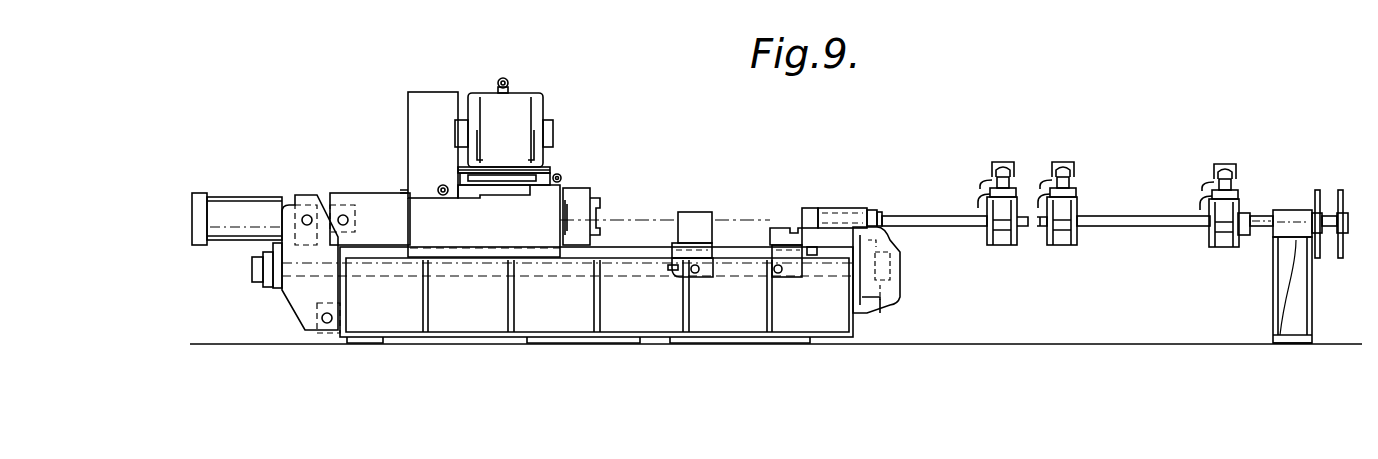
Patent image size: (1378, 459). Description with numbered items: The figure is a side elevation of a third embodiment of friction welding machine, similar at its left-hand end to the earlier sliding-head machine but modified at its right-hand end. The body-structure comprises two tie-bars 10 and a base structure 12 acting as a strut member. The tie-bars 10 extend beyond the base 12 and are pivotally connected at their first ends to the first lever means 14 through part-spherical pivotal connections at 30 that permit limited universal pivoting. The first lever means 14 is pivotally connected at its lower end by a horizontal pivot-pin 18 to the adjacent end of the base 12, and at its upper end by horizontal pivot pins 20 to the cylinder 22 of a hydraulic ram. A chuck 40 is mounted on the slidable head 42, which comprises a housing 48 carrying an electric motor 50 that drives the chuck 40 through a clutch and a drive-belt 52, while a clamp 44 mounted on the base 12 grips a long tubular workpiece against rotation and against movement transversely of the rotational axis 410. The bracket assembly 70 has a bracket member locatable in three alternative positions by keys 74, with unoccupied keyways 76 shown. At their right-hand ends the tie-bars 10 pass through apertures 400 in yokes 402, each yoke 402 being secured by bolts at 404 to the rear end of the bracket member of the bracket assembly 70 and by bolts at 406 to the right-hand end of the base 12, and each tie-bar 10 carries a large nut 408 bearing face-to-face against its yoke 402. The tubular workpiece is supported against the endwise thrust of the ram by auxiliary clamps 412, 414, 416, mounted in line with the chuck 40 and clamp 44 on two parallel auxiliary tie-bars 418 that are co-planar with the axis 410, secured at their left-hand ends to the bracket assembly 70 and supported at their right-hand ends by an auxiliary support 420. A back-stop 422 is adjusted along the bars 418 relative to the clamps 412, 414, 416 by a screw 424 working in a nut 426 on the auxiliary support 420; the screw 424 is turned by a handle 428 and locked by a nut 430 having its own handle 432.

The tie-bars 10 is at (410, 273).
The base structure 12 is at (652, 317).
The first lever means 14 is at (290, 310).
The pivot-pin 18 is at (325, 325).
The pivot pins 20 is at (306, 214).
The cylinder 22 is at (302, 196).
The pivotal connection 30 is at (265, 290).
The chuck 40 is at (580, 192).
The slidable head 42 is at (563, 159).
The clamp 44 is at (700, 210).
The housing 48 is at (560, 218).
The electric motor 50 is at (512, 107).
The drive-belt 52 is at (438, 102).
The bracket assembly 70 is at (827, 240).
The keys 74 is at (842, 226).
The keyways 76 is at (794, 218).
The apertures 400 is at (883, 302).
The yokes 402 is at (873, 243).
The bolts 404 is at (900, 250).
The bolts 406 is at (871, 290).
The large nut 408 is at (882, 297).
The rotational axis 410 is at (612, 212).
The auxiliary clamp 412 is at (966, 209).
The auxiliary clamp 414 is at (1088, 204).
The auxiliary clamp 416 is at (1245, 190).
The auxiliary tie-bars 418 is at (1142, 218).
The auxiliary support 420 is at (1277, 280).
The back-stop 422 is at (1247, 217).
The screw 424 is at (1267, 229).
The nut 426 is at (1307, 290).
The handle 428 is at (1346, 263).
The nut 430 is at (1322, 217).
The handle 432 is at (1297, 240).